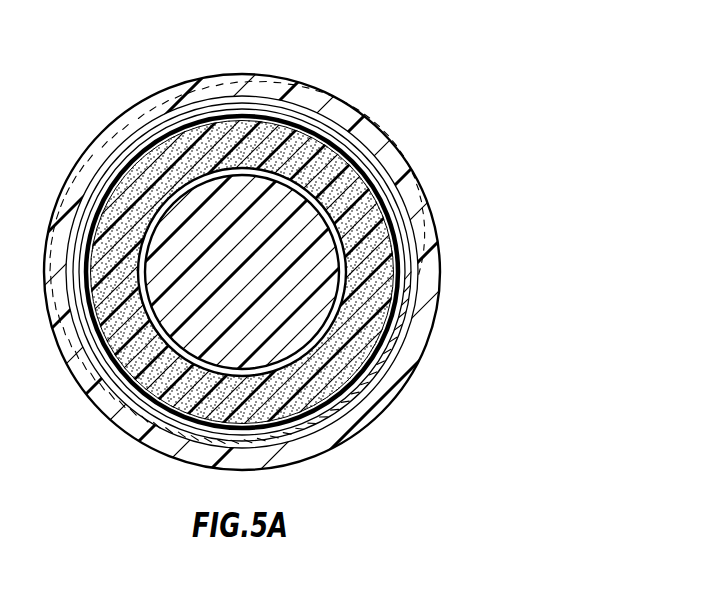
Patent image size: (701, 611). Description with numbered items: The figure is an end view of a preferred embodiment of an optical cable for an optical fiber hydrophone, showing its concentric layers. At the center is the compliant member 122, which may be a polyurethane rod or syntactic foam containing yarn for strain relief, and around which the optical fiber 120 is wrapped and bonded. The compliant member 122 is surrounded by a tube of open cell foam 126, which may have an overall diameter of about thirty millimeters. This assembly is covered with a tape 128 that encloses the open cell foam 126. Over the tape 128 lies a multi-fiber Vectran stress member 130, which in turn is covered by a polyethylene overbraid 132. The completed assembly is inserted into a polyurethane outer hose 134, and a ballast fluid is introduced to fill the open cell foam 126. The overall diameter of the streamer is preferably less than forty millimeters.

The optical fiber 120 is at (276, 336).
The compliant member 122 is at (341, 406).
The tube of open cell foam 126 is at (392, 293).
The tape 128 is at (403, 253).
The multi-fiber Vectran stress member 130 is at (402, 207).
The polyethylene overbraid 132 is at (386, 164).
The polyurethane outer hose 134 is at (310, 100).